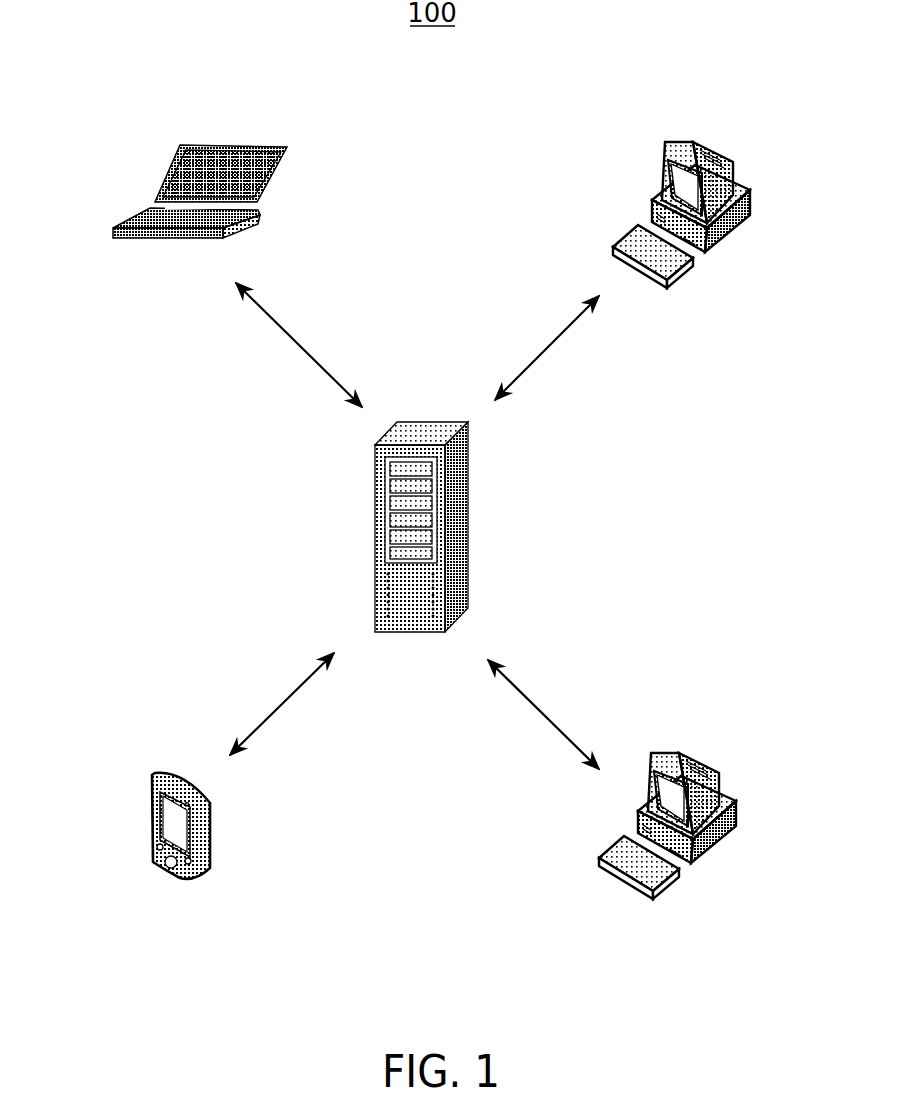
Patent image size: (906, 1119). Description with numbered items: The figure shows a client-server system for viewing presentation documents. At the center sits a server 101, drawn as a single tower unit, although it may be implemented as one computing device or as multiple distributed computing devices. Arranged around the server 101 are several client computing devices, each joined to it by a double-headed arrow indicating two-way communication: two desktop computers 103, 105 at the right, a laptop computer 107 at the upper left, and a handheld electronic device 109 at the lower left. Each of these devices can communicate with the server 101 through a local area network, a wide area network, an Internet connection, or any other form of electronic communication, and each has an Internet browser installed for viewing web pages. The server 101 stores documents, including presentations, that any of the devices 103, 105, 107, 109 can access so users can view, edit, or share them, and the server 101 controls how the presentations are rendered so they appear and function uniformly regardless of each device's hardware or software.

The server 101 is at (363, 528).
The desktop computer 103 is at (738, 255).
The desktop computer 105 is at (730, 857).
The laptop computer 107 is at (93, 228).
The handheld electronic device 109 is at (133, 850).